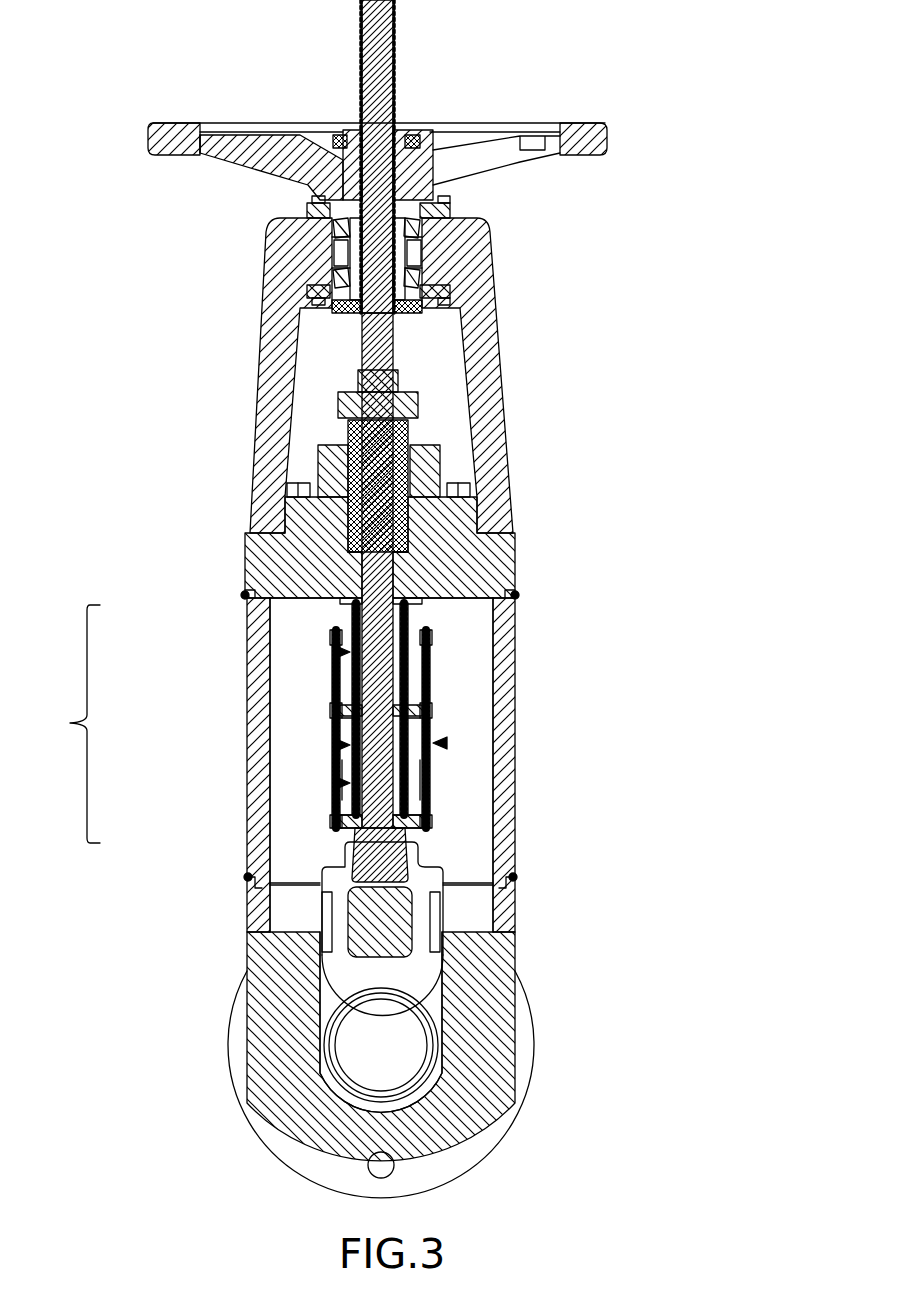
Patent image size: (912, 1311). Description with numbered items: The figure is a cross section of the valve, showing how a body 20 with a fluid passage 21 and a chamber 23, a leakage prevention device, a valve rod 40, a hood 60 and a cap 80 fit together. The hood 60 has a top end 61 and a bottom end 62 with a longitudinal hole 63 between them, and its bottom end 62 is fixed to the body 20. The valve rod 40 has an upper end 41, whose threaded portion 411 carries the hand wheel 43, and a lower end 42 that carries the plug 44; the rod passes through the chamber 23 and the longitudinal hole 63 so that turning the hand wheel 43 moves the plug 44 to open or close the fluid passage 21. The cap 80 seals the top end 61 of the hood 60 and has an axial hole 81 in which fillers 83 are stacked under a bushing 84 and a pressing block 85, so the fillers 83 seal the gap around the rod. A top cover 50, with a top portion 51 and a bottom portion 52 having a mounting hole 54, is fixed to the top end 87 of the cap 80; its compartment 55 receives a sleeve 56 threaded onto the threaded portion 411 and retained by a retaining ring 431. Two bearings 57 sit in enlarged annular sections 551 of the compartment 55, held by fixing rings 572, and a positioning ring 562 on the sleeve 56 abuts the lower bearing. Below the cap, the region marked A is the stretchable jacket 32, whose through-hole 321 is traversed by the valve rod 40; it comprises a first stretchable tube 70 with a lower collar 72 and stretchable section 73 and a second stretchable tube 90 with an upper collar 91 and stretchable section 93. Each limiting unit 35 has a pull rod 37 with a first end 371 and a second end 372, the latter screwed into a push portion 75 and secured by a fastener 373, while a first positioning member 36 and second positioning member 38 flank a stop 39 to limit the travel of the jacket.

The body 20 is at (527, 1057).
The fluid passage 21 is at (415, 1040).
The chamber 23 is at (420, 990).
The stretchable jacket 32 is at (379, 749).
The through-hole 321 is at (358, 677).
The limiting unit 35 is at (445, 742).
The first positioning member 36 is at (432, 637).
The pull rod 37 is at (427, 770).
The first end 371 is at (428, 637).
The second end 372 is at (513, 877).
The fastener 373 is at (428, 832).
The second positioning member 38 is at (427, 720).
The stop 39 is at (428, 707).
The valve rod 40 is at (385, 355).
The upper end 41 is at (385, 28).
The threaded portion 411 is at (362, 61).
The lower end 42 is at (375, 802).
The hand wheel 43 is at (572, 127).
The retaining ring 431 is at (417, 140).
The plug 44 is at (423, 918).
The top cover 50 is at (368, 360).
The top portion 51 is at (278, 222).
The bottom portion 52 is at (253, 497).
The mounting hole 54 is at (283, 503).
The compartment 55 is at (350, 258).
The enlarged annular section 551 is at (342, 228).
The sleeve 56 is at (427, 255).
The bearing 57 is at (425, 233).
The positioning ring 562 is at (397, 313).
The fixing ring 572 is at (428, 212).
The hood 60 is at (341, 765).
The top end 61 is at (252, 630).
The bottom end 62 is at (265, 845).
The longitudinal hole 63 is at (282, 698).
The first stretchable tube 70 is at (340, 745).
The lower collar 72 is at (347, 828).
The stretchable section 73 is at (428, 800).
The push portion 75 is at (433, 825).
The cap 80 is at (510, 547).
The axial hole 81 is at (357, 572).
The fillers 83 is at (410, 500).
The bushing 84 is at (410, 435).
The pressing block 85 is at (418, 405).
The top end 87 is at (275, 542).
The second stretchable tube 90 is at (340, 652).
The upper collar 91 is at (355, 603).
The stretchable section 93 is at (400, 658).
The buffer assembly region A is at (68, 723).